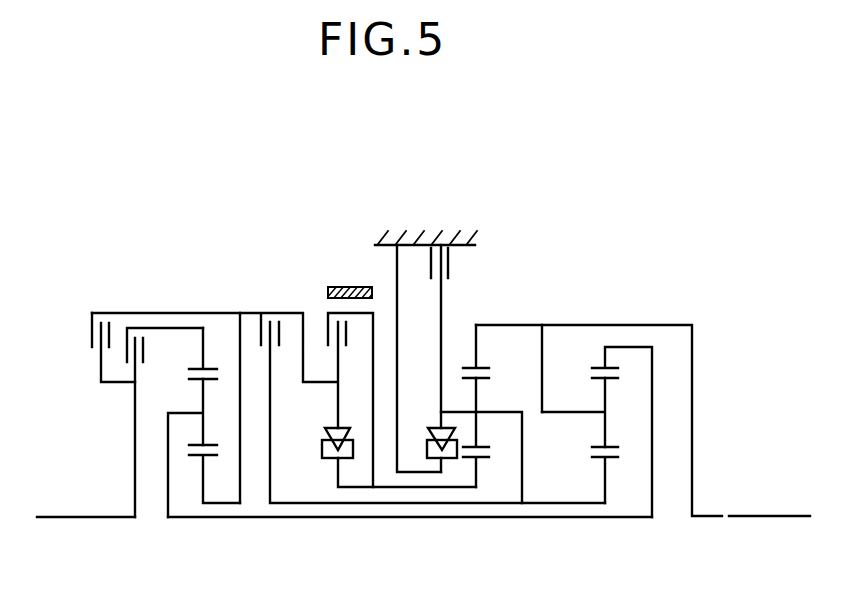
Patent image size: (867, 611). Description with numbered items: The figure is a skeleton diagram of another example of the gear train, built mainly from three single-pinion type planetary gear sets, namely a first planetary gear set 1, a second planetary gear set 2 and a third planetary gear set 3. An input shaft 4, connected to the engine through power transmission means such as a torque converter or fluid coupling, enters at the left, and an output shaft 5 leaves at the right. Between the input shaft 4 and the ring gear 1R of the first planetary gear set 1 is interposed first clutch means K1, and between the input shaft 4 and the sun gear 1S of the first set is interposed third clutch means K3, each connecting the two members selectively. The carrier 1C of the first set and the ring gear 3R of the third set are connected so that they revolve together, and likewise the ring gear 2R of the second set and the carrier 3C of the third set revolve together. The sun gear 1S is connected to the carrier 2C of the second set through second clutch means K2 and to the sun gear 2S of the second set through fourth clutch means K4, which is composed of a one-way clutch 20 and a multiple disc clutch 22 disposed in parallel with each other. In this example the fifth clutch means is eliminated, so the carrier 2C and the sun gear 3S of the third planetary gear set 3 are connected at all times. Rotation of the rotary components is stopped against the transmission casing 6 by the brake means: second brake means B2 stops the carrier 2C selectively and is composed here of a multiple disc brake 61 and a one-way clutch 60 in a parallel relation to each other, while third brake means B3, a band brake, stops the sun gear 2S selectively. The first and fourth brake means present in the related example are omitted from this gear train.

The third clutch means K3 is at (111, 333).
The second clutch means K2 is at (348, 394).
The first clutch means K1 is at (165, 422).
The fourth clutch means K4 is at (351, 336).
The ring gear of the first planetary gear set 1R is at (211, 353).
The carrier of the first planetary gear set 1C is at (185, 448).
The sun gear of the first planetary gear set 1S is at (214, 474).
The ring gear of the second planetary gear set 2R is at (488, 351).
The carrier of the second planetary gear set 2C is at (481, 444).
The sun gear of the second planetary gear set 2S is at (486, 435).
The ring gear of the third planetary gear set 3R is at (597, 421).
The carrier of the third planetary gear set 3C is at (573, 412).
The sun gear of the third planetary gear set 3S is at (615, 475).
The second brake means B2 is at (431, 402).
The third brake means B3 is at (353, 279).
The multiple disc clutch 22 is at (327, 327).
The one-way clutch 20 is at (323, 445).
The one-way clutch 60 is at (428, 450).
The transmission casing 6 is at (435, 238).
The multiple disc brake 61 is at (449, 265).
The input shaft 4 is at (105, 515).
The output shaft 5 is at (760, 515).
The first planetary gear set 1 is at (409, 445).
The second planetary gear set 2 is at (481, 449).
The third planetary gear set 3 is at (597, 453).